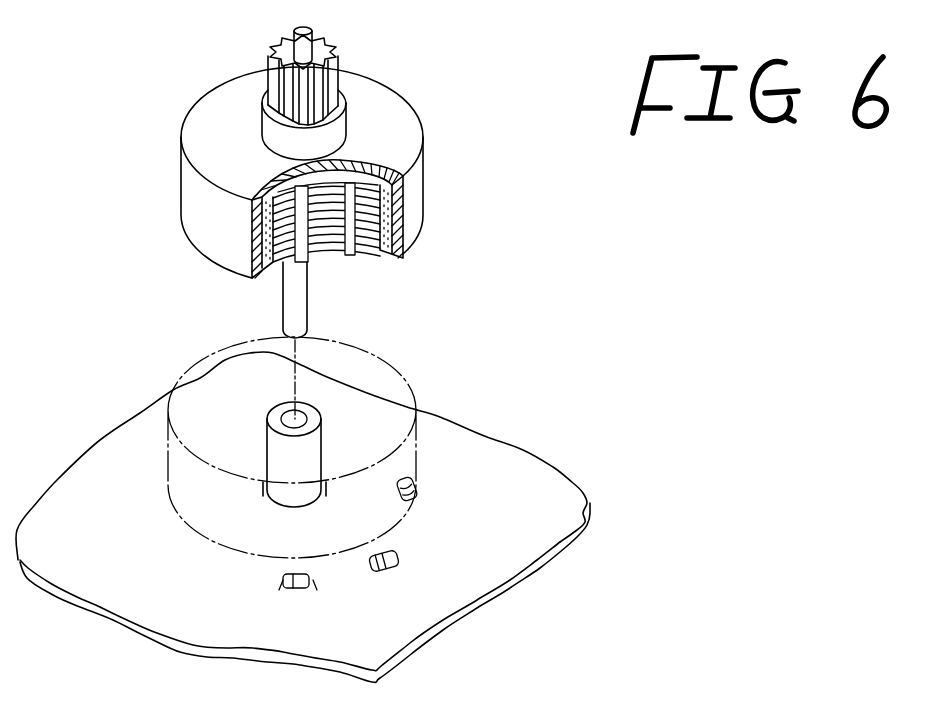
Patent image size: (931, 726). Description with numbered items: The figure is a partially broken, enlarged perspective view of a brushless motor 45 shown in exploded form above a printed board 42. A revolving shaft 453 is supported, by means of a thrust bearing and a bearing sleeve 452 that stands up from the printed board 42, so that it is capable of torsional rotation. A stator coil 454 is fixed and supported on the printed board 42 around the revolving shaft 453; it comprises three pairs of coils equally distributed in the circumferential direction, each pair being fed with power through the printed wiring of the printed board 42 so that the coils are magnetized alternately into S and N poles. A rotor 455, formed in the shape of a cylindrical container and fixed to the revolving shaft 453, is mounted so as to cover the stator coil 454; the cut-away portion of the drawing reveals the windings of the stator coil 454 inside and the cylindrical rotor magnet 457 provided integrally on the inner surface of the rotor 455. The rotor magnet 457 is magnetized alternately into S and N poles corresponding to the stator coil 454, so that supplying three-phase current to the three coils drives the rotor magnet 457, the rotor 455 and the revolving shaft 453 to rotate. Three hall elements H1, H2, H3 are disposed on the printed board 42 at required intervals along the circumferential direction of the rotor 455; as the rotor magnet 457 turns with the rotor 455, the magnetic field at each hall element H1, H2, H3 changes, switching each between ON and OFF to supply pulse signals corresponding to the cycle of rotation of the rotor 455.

The brushless motor 45 is at (443, 89).
The rotor 455 is at (423, 137).
The rotor magnet 457 is at (408, 213).
The stator coil 454 is at (357, 255).
The revolving shaft 453 is at (283, 300).
The bearing sleeve 452 is at (310, 445).
The printed board 42 is at (510, 467).
The hall element H1 is at (417, 483).
The hall element H2 is at (397, 565).
The hall element H3 is at (305, 590).